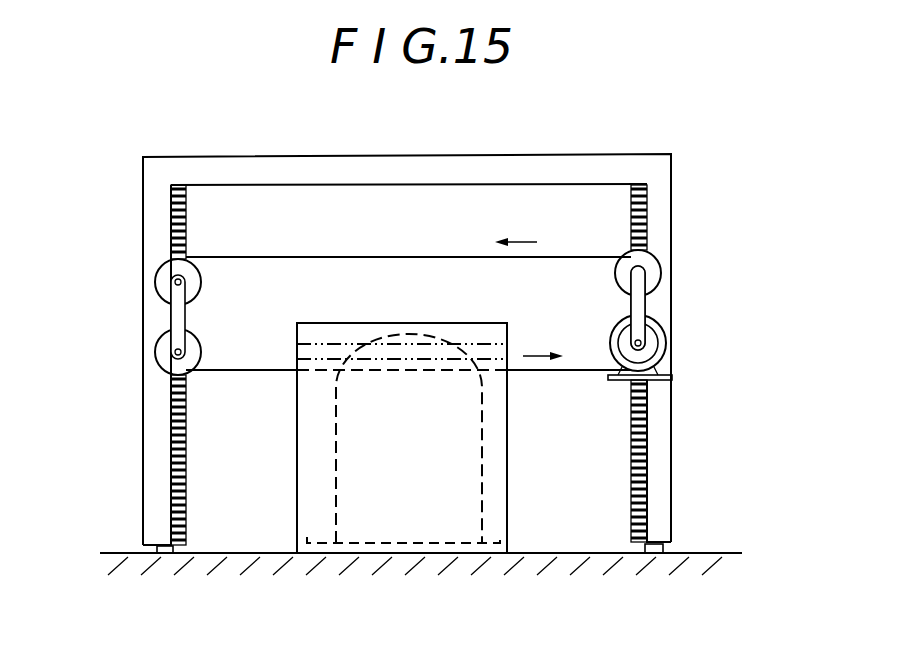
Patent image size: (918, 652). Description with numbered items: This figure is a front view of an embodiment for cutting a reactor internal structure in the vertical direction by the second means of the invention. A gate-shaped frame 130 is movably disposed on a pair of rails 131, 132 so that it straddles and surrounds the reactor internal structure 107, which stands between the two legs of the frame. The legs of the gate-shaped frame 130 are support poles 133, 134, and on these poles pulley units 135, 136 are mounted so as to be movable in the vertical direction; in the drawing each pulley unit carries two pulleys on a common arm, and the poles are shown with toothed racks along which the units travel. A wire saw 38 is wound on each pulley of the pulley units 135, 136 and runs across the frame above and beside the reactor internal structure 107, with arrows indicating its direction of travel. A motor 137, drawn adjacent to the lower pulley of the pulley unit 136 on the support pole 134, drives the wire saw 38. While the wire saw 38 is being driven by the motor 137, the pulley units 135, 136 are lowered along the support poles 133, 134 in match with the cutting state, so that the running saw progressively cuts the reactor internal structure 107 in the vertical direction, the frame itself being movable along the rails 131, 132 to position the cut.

The gate-shaped frame 130 is at (250, 155).
The wire saw 38 is at (388, 257).
The pulley unit 135 is at (158, 316).
The pulley unit 136 is at (655, 303).
The motor 137 is at (668, 347).
The support pole 133 is at (157, 467).
The support pole 134 is at (663, 427).
The rail 131 is at (165, 555).
The rail 132 is at (655, 555).
The reactor internal structure 107 is at (495, 462).